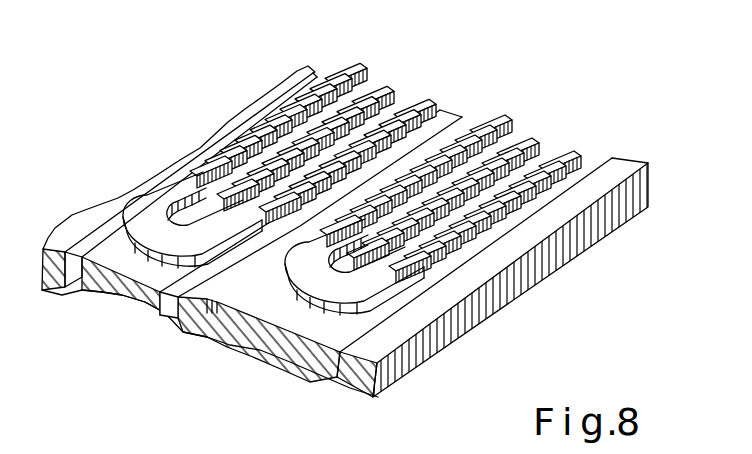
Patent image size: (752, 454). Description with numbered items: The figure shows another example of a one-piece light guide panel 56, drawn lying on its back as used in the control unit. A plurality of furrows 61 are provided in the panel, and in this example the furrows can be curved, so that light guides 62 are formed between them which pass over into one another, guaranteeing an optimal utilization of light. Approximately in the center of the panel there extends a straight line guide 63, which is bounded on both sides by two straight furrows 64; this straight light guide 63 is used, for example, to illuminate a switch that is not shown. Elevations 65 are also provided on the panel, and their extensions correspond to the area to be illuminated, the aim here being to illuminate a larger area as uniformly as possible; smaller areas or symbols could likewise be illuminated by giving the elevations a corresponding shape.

The one-piece light guide panel 56 is at (208, 122).
The furrows 61 is at (312, 305).
The light guides 62 is at (230, 227).
The straight line guide 63 is at (190, 308).
The straight furrows 64 is at (140, 325).
The elevations 65 is at (497, 123).